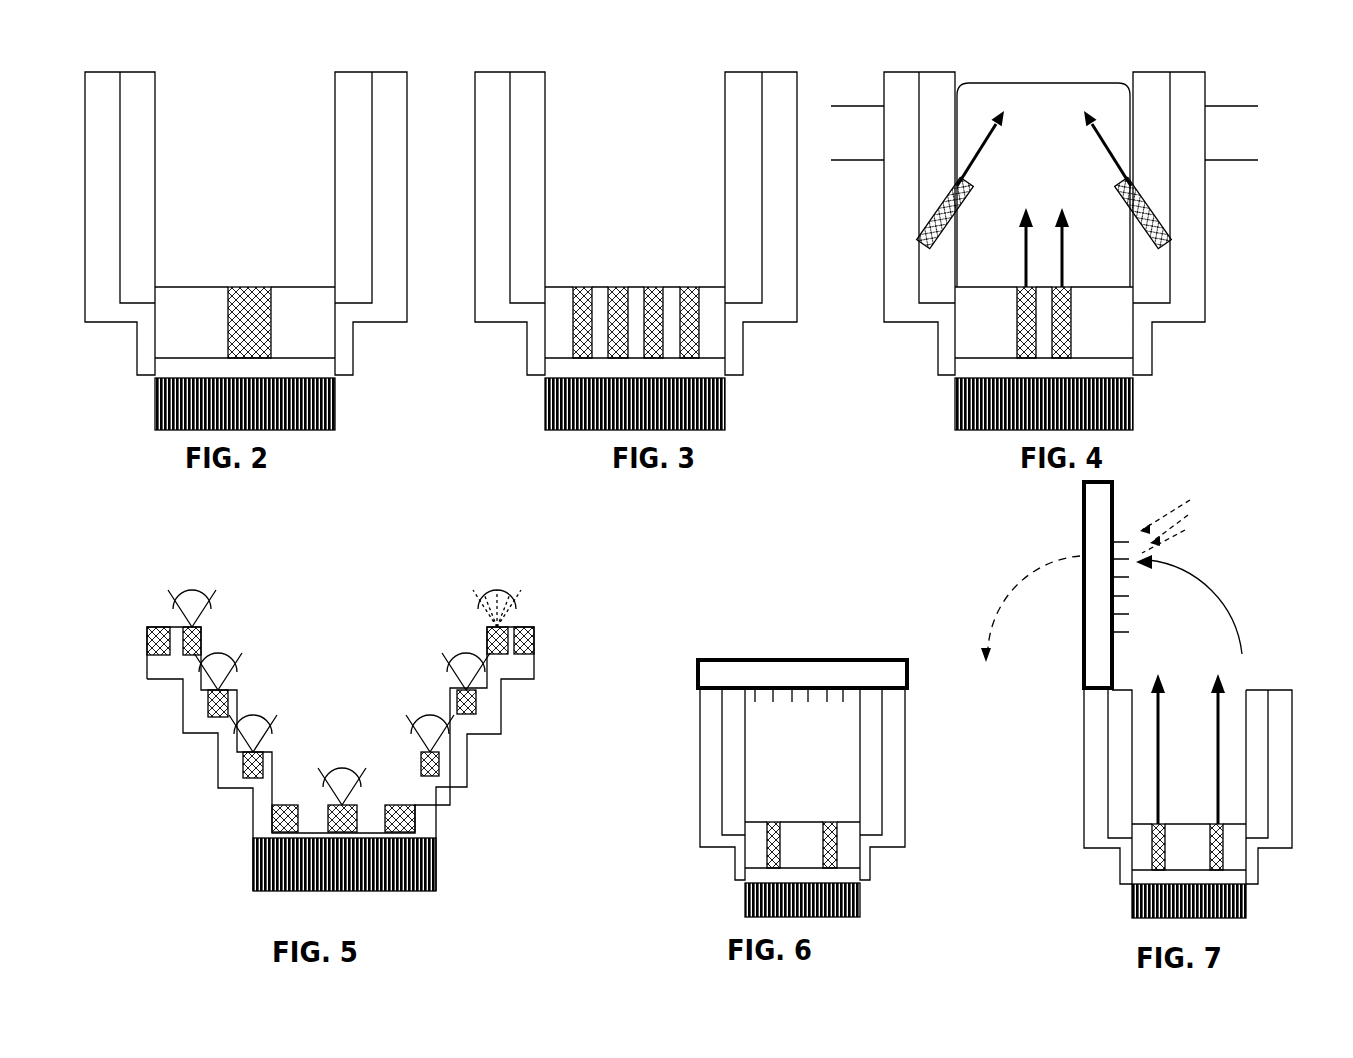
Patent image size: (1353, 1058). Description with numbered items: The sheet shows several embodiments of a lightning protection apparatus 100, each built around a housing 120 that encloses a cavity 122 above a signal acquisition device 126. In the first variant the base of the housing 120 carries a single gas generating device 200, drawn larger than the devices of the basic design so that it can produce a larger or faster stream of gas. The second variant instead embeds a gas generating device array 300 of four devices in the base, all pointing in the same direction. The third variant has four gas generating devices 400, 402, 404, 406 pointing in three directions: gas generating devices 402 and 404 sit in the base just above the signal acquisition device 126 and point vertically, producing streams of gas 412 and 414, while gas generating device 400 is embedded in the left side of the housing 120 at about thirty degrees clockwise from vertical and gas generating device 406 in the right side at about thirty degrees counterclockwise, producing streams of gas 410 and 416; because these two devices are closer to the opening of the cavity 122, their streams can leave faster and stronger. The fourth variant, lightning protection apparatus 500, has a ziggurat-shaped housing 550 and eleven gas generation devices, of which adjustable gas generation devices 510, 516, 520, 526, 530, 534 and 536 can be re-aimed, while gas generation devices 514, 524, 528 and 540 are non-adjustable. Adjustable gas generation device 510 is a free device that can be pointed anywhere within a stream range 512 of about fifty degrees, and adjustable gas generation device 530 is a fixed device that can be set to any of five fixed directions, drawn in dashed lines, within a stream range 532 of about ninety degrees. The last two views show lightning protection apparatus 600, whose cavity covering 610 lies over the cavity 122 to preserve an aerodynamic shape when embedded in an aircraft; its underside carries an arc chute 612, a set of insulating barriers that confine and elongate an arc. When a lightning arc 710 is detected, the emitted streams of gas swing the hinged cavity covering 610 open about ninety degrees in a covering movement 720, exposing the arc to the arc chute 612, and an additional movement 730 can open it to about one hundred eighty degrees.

In FIG. 2, the lightning protection apparatus 100 is at (246, 251).
In FIG. 3, the lightning protection apparatus 100 is at (659, 243).
In FIG. 4, the lightning protection apparatus 100 is at (1062, 235).
In FIG. 2, the housing 120 is at (335, 144).
In FIG. 3, the housing 120 is at (789, 367).
In FIG. 4, the housing 120 is at (1251, 304).
In FIG. 4, the cavity 122 is at (1052, 83).
In FIG. 6, the cavity 122 is at (802, 761).
In FIG. 3, the signal acquisition device 126 is at (597, 384).
In FIG. 4, the signal acquisition device 126 is at (1006, 385).
In FIG. 5, the signal acquisition device 126 is at (476, 865).
In FIG. 7, the signal acquisition device 126 is at (1132, 914).
In FIG. 2, the gas generating device 200 is at (263, 267).
In FIG. 3, the gas generating device array 300 is at (708, 282).
In FIG. 4, the gas generating device 400 is at (934, 207).
In FIG. 4, the gas generating device 402 is at (1016, 336).
In FIG. 4, the gas generating device 404 is at (1070, 336).
In FIG. 4, the gas generating device 406 is at (1159, 225).
In FIG. 4, the stream of gas 410 is at (1013, 151).
In FIG. 4, the stream of gas 412 is at (1025, 268).
In FIG. 4, the stream of gas 414 is at (1073, 267).
In FIG. 4, the stream of gas 416 is at (1095, 136).
In FIG. 5, the lightning protection apparatus 500 is at (338, 691).
In FIG. 5, the adjustable gas generation device 510 is at (225, 573).
In FIG. 5, the stream range 512 is at (168, 559).
In FIG. 5, the gas generation device 514 is at (160, 627).
In FIG. 5, the adjustable gas generation device 516 is at (208, 703).
In FIG. 5, the adjustable gas generation device 520 is at (272, 757).
In FIG. 5, the gas generation device 524 is at (293, 805).
In FIG. 5, the adjustable gas generation device 526 is at (328, 827).
In FIG. 5, the gas generation device 528 is at (401, 803).
In FIG. 5, the adjustable gas generation device 530 is at (460, 590).
In FIG. 5, the stream range 532 is at (503, 577).
In FIG. 5, the adjustable gas generation device 534 is at (439, 765).
In FIG. 5, the adjustable gas generation device 536 is at (476, 701).
In FIG. 5, the gas generation device 540 is at (552, 604).
In FIG. 5, the housing 550 is at (439, 789).
In FIG. 6, the lightning protection apparatus 600 is at (767, 760).
In FIG. 7, the lightning protection apparatus 600 is at (1133, 700).
In FIG. 6, the cavity covering 610 is at (790, 660).
In FIG. 7, the cavity covering 610 is at (1084, 638).
In FIG. 6, the arc chute 612 is at (808, 702).
In FIG. 7, the lightning arc 710 is at (1188, 520).
In FIG. 7, the covering movement 720 is at (1267, 603).
In FIG. 7, the additional movement 730 is at (994, 602).